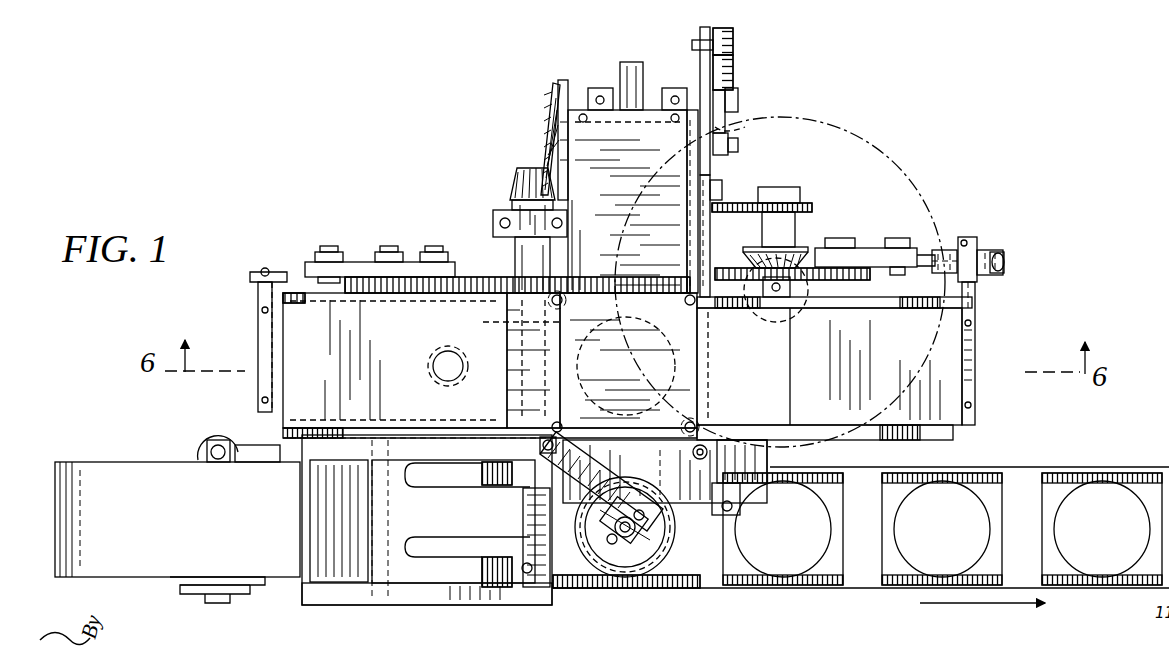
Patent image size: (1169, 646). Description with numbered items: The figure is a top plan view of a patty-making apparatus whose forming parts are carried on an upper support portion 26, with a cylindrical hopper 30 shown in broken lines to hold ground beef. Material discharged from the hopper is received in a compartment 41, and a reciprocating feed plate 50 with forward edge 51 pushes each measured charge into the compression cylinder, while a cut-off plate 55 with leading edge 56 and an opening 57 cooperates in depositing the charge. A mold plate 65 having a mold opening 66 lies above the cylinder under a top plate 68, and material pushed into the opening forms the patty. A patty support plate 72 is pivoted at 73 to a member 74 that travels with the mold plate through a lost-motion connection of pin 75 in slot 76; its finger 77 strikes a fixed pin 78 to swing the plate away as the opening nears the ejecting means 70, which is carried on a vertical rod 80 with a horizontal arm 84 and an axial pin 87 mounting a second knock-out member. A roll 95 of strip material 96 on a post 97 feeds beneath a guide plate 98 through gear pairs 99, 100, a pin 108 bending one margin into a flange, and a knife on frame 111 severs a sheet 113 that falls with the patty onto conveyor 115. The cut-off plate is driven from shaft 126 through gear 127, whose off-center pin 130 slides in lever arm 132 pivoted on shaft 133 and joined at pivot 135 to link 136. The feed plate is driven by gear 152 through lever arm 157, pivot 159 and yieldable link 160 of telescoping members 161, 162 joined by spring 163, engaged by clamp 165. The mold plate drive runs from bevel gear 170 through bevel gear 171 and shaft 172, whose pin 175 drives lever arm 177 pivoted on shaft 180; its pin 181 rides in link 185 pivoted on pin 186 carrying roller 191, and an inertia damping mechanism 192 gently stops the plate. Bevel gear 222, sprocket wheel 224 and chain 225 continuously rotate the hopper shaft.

The upper support portion 26 is at (280, 225).
The hopper 30 is at (895, 167).
The compartment 41 is at (742, 380).
The feed plate 50 is at (834, 368).
The forward edge 51 is at (780, 393).
The cut-off plate 55 is at (395, 360).
The leading edge 56 is at (500, 322).
The opening 57 is at (445, 371).
The mold plate 65 is at (627, 190).
The mold opening 66 is at (590, 389).
The top plate 68 is at (623, 363).
The ejecting means 70 is at (672, 557).
The patty support plate 72 is at (665, 471).
The pivot 73 is at (692, 454).
The member 74 is at (710, 234).
The pin 75 is at (685, 137).
The slot 76 is at (722, 186).
The finger 77 is at (767, 456).
The fixed pin 78 is at (722, 512).
The vertical rod 80 is at (538, 446).
The horizontal arm 84 is at (601, 487).
The axial pin 87 is at (628, 532).
The roll 95 is at (98, 480).
The strip material 96 is at (582, 592).
The post 97 is at (210, 452).
The guide plate 98 is at (438, 575).
The pair of gears 99 is at (482, 480).
The pair of gears 100 is at (482, 575).
The pin 108 is at (527, 576).
The frame 111 is at (461, 523).
The sheet 113 is at (840, 578).
The conveyor 115 is at (658, 590).
The shaft 126 is at (515, 258).
The gear 127 is at (458, 277).
The off-center pin 130 is at (391, 244).
The lever arm 132 is at (355, 262).
The shaft 133 is at (438, 252).
The pivot 135 is at (332, 252).
The link 136 is at (285, 275).
The gear 152 is at (868, 292).
The lever arm 157 is at (858, 248).
The pivot 159 is at (896, 244).
The yieldable link 160 is at (988, 256).
The external member 161 is at (1003, 256).
The internal member 162 is at (1006, 263).
The spring 163 is at (950, 250).
The clamp 165 is at (966, 240).
The bevel gear 170 is at (512, 180).
The bevel gear 171 is at (545, 100).
The shaft 172 is at (568, 80).
The pin 175 is at (740, 90).
The lever arm 177 is at (735, 62).
The shaft 180 is at (795, 125).
The pin 181 is at (735, 44).
The link 185 is at (700, 62).
The pin 186 is at (740, 100).
The roller 191 is at (742, 142).
The inertia damping mechanism 192 is at (633, 60).
The bevel gear 222 is at (800, 245).
The sprocket wheel 224 is at (800, 190).
The chain 225 is at (745, 203).